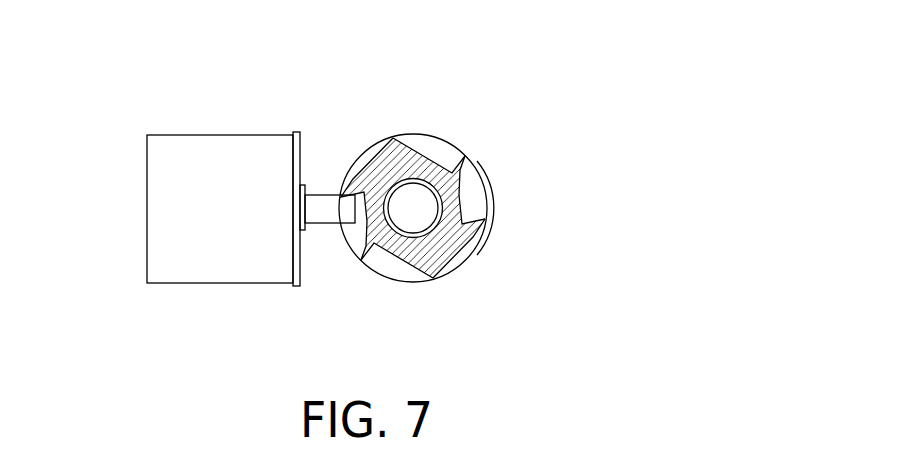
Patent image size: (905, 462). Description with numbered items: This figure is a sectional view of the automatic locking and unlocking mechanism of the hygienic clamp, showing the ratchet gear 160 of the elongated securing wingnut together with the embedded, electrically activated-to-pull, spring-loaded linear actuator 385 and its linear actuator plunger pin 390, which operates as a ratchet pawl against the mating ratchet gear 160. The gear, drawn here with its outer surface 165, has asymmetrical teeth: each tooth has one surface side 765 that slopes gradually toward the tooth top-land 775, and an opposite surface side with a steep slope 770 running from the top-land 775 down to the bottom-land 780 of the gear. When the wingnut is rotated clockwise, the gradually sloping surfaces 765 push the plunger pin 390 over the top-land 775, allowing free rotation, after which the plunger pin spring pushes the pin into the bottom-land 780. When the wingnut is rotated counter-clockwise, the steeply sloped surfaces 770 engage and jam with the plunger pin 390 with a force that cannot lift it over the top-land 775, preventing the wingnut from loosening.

The linear actuator 385 is at (196, 185).
The linear actuator plunger pin 390 is at (325, 217).
The ratchet gear 160 is at (470, 197).
The outer surface of rotary member 165 is at (485, 208).
The gradually sloping surface side 765 is at (409, 150).
The tooth top-land 775 is at (462, 156).
The bottom-land 780 is at (433, 252).
The steep slope surface side 770 is at (373, 250).